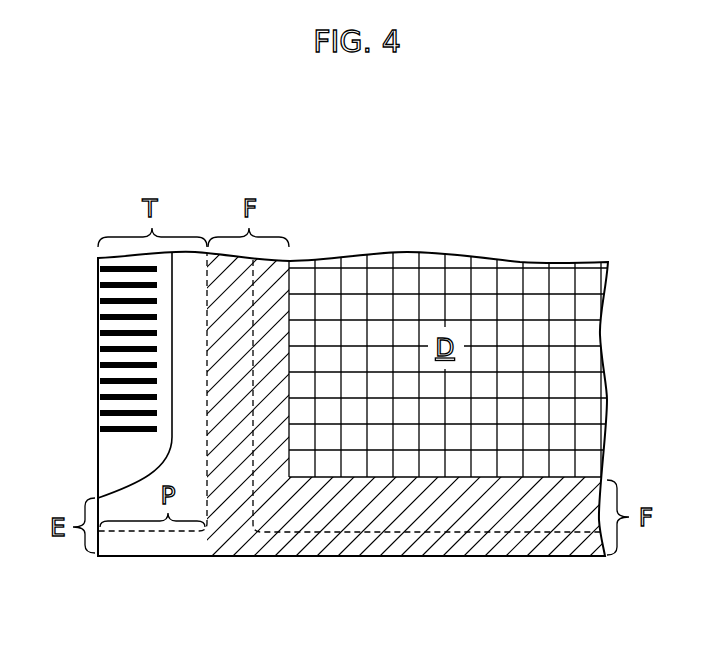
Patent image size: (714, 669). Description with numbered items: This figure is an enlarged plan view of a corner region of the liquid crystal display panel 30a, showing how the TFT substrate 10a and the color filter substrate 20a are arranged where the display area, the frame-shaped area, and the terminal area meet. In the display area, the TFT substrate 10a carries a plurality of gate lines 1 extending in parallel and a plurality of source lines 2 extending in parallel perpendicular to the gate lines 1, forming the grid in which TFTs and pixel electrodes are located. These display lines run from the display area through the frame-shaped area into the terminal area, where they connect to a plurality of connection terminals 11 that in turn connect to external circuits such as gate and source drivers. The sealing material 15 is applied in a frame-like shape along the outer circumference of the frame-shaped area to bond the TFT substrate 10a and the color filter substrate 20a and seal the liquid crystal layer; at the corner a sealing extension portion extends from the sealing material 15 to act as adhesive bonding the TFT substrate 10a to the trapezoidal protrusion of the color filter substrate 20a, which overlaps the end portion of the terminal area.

The liquid crystal display panel 30a is at (163, 153).
The gate line 1 is at (485, 292).
The source line 2 is at (498, 306).
The sealing material 15 is at (380, 540).
The connection terminal 11 is at (91, 268).
The TFT substrate 10a is at (115, 452).
The color filter substrate 20a is at (128, 507).